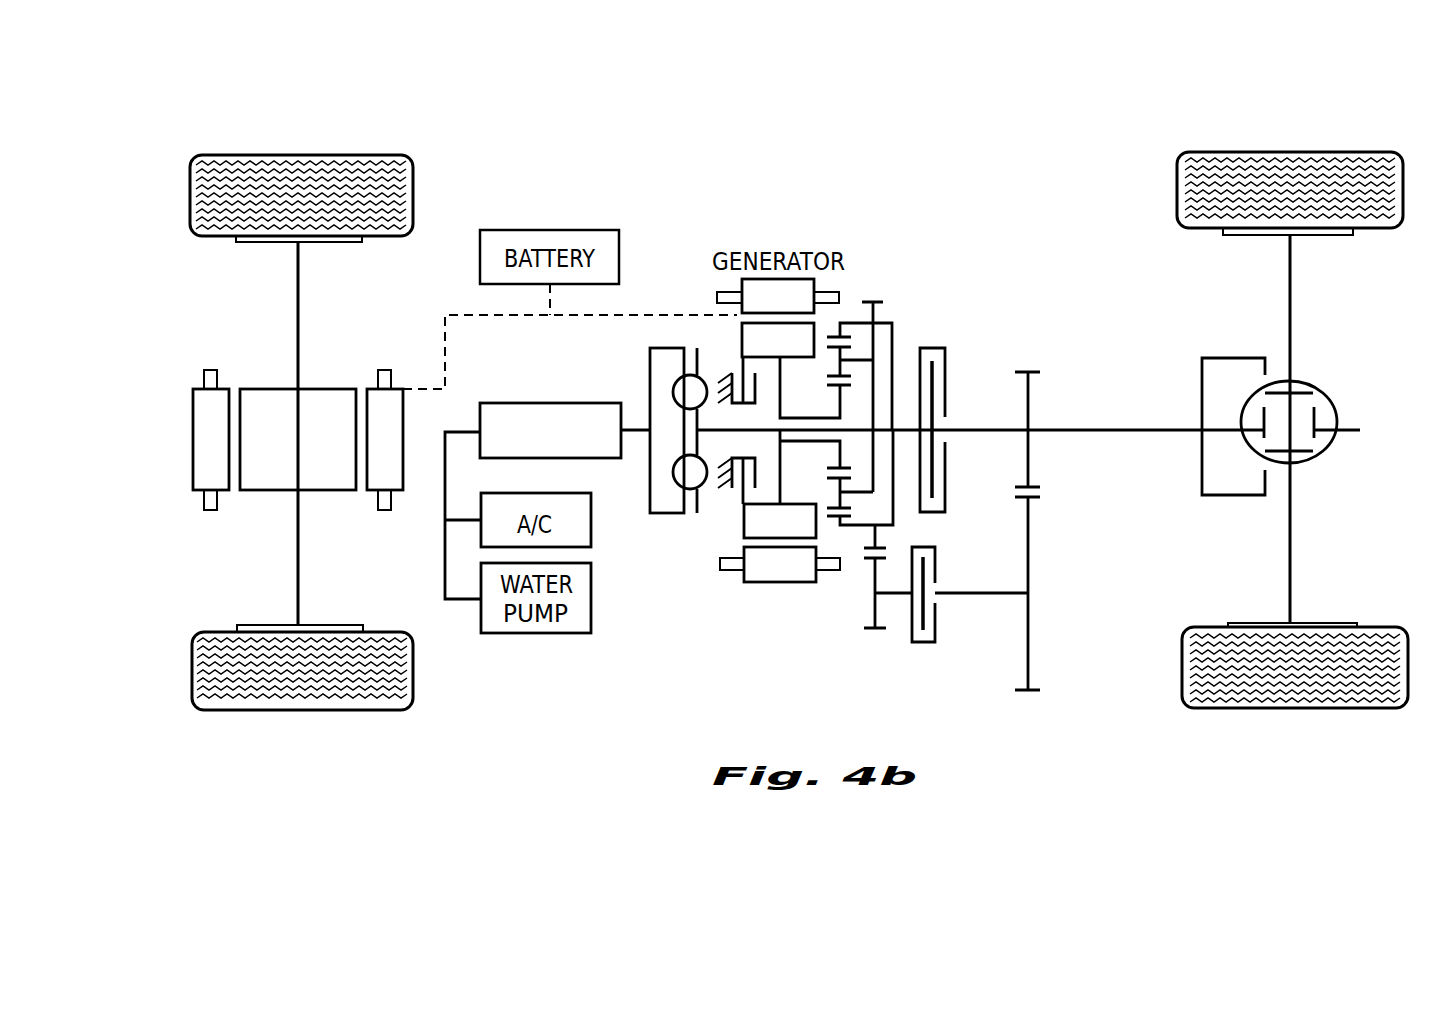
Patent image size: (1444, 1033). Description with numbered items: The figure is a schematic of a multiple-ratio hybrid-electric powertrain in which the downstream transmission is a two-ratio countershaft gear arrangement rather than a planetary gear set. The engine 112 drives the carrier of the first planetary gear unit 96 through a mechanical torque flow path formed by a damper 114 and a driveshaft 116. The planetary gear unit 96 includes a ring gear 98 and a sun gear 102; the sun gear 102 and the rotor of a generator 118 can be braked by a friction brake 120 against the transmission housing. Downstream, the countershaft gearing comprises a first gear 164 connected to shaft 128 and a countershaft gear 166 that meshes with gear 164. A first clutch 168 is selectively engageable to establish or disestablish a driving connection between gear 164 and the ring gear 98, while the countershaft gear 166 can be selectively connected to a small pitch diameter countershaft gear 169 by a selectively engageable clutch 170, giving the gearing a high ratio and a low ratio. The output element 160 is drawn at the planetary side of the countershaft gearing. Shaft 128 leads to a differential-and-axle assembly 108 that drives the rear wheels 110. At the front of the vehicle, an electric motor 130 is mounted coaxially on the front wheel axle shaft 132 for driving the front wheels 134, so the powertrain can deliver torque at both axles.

The first planetary gear unit 96 is at (891, 320).
The ring gear 98 is at (848, 530).
The sun gear 102 is at (842, 406).
The differential-and-axle assembly 108 is at (1322, 392).
The rear wheels 110 is at (1338, 152).
The engine 112 is at (547, 403).
The damper 114 is at (682, 395).
The driveshaft 116 is at (715, 432).
The generator 118 is at (780, 584).
The friction brake 120 is at (742, 490).
The shaft 128 is at (1127, 430).
The electric motor 130 is at (329, 483).
The front wheel axle shaft 132 is at (300, 323).
The front wheels 134 is at (355, 710).
The clutch output 160 is at (871, 494).
The first gear 164 is at (1030, 406).
The countershaft gear 166 is at (1030, 545).
The first clutch 168 is at (945, 404).
The small pitch diameter countershaft gear 169 is at (874, 610).
The clutch 170 is at (937, 615).